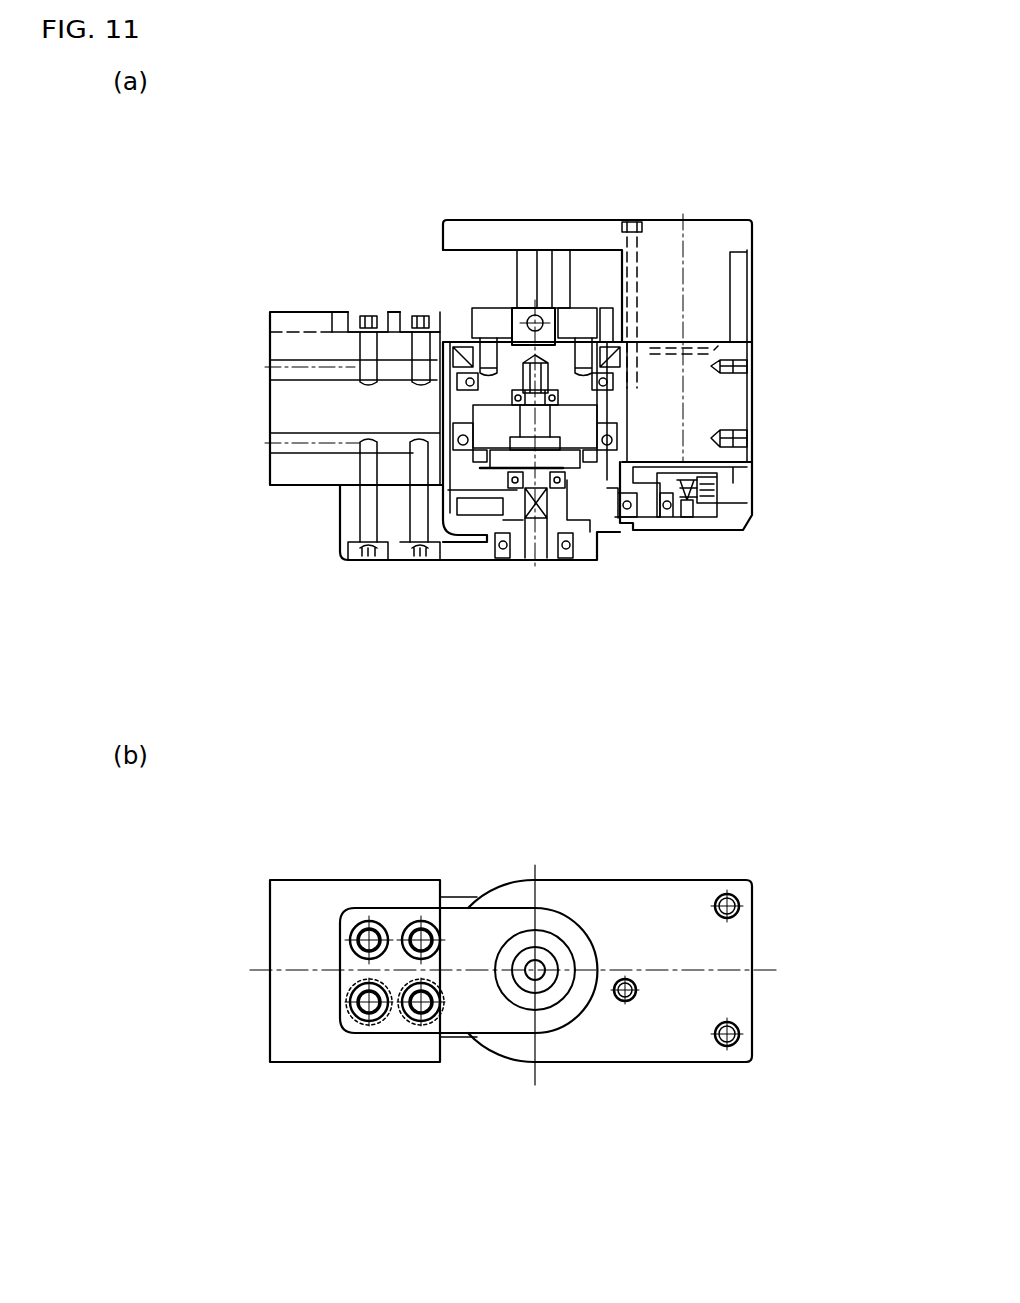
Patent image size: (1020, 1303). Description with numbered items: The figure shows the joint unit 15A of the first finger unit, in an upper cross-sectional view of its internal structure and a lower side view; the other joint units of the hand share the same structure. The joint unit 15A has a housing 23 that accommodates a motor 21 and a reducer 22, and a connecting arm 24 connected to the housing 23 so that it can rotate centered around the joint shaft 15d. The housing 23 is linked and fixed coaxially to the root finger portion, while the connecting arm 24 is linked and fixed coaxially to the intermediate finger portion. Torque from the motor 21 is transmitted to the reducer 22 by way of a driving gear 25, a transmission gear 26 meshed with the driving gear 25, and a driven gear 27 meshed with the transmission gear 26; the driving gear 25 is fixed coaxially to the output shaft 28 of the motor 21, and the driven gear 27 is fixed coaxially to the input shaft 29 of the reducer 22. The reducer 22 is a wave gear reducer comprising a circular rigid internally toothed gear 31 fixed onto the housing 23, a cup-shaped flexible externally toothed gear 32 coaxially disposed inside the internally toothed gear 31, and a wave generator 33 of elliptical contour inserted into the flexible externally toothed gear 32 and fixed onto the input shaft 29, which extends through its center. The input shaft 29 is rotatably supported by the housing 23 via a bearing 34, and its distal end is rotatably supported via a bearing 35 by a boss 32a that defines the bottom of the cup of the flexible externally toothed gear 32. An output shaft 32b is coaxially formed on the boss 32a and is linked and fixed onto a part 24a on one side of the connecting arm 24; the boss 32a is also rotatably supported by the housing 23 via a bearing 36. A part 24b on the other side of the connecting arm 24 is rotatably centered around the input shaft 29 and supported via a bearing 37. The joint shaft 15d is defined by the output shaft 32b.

The joint unit 15A is at (578, 191).
The joint shaft 15d is at (553, 427).
The motor 21 is at (736, 334).
The reducer 22 is at (591, 484).
The housing 23 is at (785, 498).
The connecting arm 24 is at (298, 500).
The part on one side of the connecting arm 24a is at (480, 365).
The part on the other side of the connecting arm 24b is at (483, 553).
The driving gear 25 is at (705, 508).
The transmission gear 26 is at (627, 517).
The driven gear 27 is at (478, 504).
The output shaft of the motor 28 is at (684, 520).
The input shaft of the reducer 29 is at (536, 560).
The rigid internally toothed gear 31 is at (620, 448).
The flexible externally toothed gear 32 is at (698, 369).
The boss 32a is at (522, 362).
The output shaft 32b is at (521, 335).
The wave generator 33 is at (552, 453).
The bearing 34 is at (513, 497).
The bearing 35 is at (500, 392).
The bearing 36 is at (453, 382).
The bearing 37 is at (566, 548).